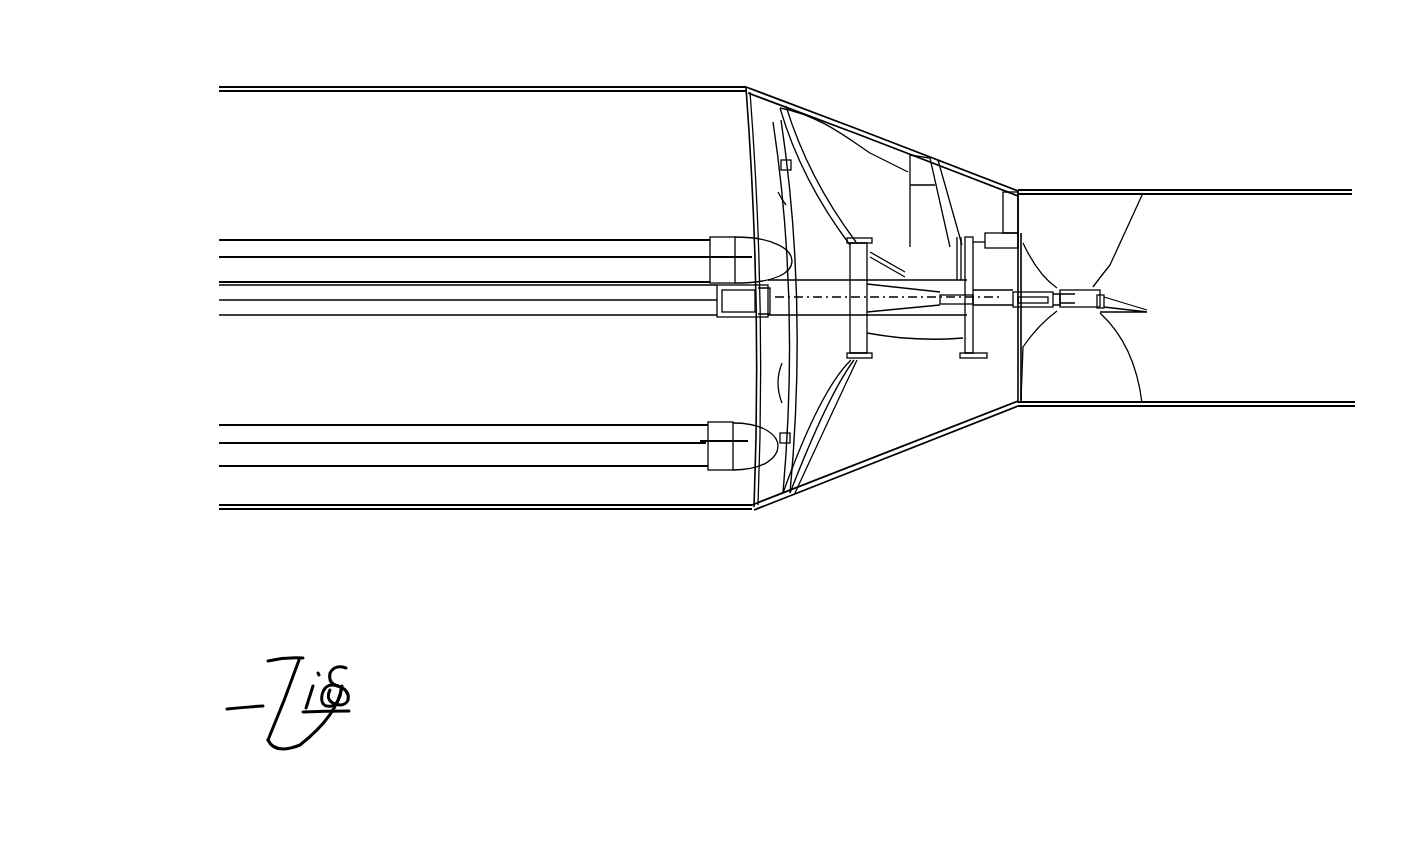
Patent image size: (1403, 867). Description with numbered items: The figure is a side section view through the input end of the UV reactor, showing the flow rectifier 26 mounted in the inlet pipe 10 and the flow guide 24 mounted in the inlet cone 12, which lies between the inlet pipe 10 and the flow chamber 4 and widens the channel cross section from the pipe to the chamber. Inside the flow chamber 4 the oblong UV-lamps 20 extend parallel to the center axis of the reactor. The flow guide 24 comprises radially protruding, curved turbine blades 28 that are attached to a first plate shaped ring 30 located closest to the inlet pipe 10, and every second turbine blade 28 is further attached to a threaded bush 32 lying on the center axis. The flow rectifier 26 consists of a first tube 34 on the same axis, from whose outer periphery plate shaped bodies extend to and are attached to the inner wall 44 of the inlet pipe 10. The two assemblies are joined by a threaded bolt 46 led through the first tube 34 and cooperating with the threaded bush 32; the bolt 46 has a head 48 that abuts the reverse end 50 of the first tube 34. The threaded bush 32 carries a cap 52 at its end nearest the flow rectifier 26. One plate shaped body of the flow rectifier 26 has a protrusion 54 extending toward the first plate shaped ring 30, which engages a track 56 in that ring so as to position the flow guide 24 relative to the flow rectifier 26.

The flow chamber 4 is at (577, 87).
The inlet pipe 10 is at (1205, 407).
The inlet cone 12 is at (967, 165).
The UV-lamps 20 is at (602, 243).
The flow guide 24 is at (893, 125).
The flow rectifier 26 is at (1100, 170).
The turbine blades 28 is at (827, 299).
The first plate shaped ring 30 is at (987, 333).
The threaded bush 32 is at (925, 303).
The first tube 34 is at (1094, 288).
The inner wall 44 is at (1275, 397).
The threaded bolt 46 is at (1080, 313).
The head 48 is at (1103, 294).
The reverse end 50 is at (1150, 312).
The cap 52 is at (997, 280).
The protrusion 54 is at (1003, 200).
The track 56 is at (970, 268).